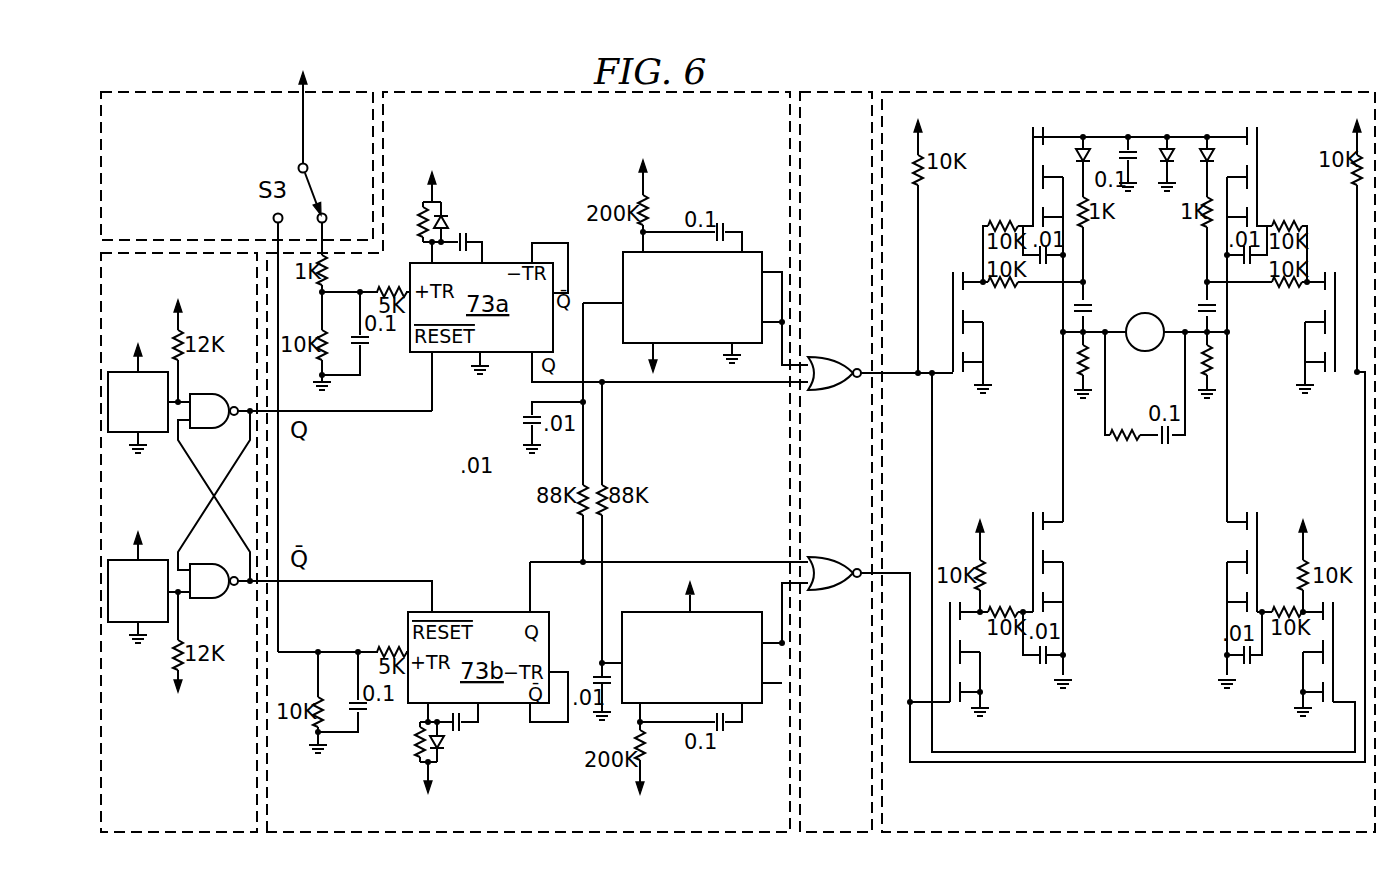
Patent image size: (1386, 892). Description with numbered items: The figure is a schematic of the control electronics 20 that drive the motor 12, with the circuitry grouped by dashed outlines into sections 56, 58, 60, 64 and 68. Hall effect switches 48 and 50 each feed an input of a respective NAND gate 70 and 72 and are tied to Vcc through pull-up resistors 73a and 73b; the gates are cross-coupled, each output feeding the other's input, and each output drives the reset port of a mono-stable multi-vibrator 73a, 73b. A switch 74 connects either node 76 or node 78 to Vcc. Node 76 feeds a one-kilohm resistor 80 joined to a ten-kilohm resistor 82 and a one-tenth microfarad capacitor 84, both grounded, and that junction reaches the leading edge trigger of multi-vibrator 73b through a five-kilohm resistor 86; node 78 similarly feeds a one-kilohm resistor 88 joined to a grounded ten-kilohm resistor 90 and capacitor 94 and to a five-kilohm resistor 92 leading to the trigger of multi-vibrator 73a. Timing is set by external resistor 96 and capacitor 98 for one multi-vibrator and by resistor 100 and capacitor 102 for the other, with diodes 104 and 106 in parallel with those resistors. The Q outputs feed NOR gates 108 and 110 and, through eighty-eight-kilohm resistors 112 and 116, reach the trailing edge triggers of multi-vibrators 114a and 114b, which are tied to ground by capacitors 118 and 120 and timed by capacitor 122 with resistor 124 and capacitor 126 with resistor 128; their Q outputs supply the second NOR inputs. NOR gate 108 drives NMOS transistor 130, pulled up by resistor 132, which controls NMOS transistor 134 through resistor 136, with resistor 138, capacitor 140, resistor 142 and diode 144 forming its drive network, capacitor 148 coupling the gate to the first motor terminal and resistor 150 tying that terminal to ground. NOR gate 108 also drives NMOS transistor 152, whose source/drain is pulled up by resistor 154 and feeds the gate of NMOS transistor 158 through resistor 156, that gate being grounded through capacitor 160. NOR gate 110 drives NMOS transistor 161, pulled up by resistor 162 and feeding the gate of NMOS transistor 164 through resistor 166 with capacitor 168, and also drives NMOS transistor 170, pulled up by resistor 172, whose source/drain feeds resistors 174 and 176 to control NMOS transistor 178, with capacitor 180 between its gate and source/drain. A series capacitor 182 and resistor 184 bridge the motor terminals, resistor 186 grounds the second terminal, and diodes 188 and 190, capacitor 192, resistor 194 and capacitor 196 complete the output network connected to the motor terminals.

The control electronics 20 is at (158, 60).
The motor 12 is at (1146, 352).
The hall effect switch 48 is at (162, 432).
The hall effect switch 50 is at (160, 560).
The switch input section 56 is at (179, 542).
The direction switch section 58 is at (237, 166).
The timer section 60 is at (528, 462).
The logic gate section 64 is at (836, 462).
The motor drive bridge section 68 is at (1128, 462).
The NAND gate 70 is at (220, 386).
The NAND gate 72 is at (212, 598).
The mono-stable multi-vibrator 73a is at (172, 336).
The mono-stable multi-vibrator 73b is at (170, 660).
The switch 74 is at (300, 164).
The node 76 is at (273, 218).
The node 78 is at (324, 212).
The 1K resistor 80 is at (316, 270).
The 10K resistor 82 is at (314, 728).
The 0.1 μF capacitor 84 is at (366, 714).
The 5K resistor 86 is at (390, 648).
The 1K resistor 88 is at (320, 290).
The 10K resistor 90 is at (318, 372).
The 5K resistor 92 is at (398, 288).
The 0.1 μF capacitor 94 is at (362, 348).
The external resistor 96 is at (418, 220).
The external capacitor 98 is at (470, 236).
The resistor 100 is at (416, 758).
The capacitor 102 is at (462, 730).
The diode 104 is at (447, 216).
The diode 106 is at (442, 756).
The NOR gate 108 is at (830, 358).
The NOR gate 110 is at (826, 558).
The 88K resistor 112 is at (578, 512).
The multi-vibrator 114a is at (672, 312).
The multi-vibrator 114b is at (682, 642).
The 88K resistor 116 is at (606, 512).
The capacitor 118 is at (528, 420).
The capacitor 120 is at (598, 674).
The capacitor 122 is at (722, 224).
The resistor 124 is at (648, 210).
The capacitor 126 is at (722, 732).
The resistor 128 is at (646, 752).
The NMOS transistor 130 is at (992, 362).
The 10K resistor 132 is at (922, 180).
The NMOS transistor 134 is at (1026, 140).
The 10K resistor 136 is at (1000, 222).
The 10K resistor 138 is at (1002, 290).
The capacitor 140 is at (1092, 300).
The resistor 142 is at (1088, 222).
The diode 144 is at (1088, 146).
The capacitor 148 is at (1046, 264).
The resistor 150 is at (1078, 360).
The NMOS transistor 152 is at (1290, 704).
The resistor 154 is at (1308, 566).
The 10K resistor 156 is at (1284, 606).
The NMOS transistor 158 is at (1264, 518).
The 0.01 μF capacitor 160 is at (1250, 664).
The NMOS transistor 161 is at (996, 702).
The 10K resistor 162 is at (974, 566).
The NMOS transistor 164 is at (1026, 518).
The 10K resistor 166 is at (1004, 606).
The 0.01 μF capacitor 168 is at (1046, 664).
The NMOS transistor 170 is at (1292, 370).
The pull-up resistor 172 is at (1352, 182).
The 10K resistor 174 is at (1288, 290).
The 10K resistor 176 is at (1286, 222).
The NMOS transistor 178 is at (1268, 144).
The 0.01 μF capacitor 180 is at (1246, 264).
The 0.1 μF capacitor 182 is at (1166, 444).
The resistor 184 is at (1122, 442).
The 120 ohm resistor 186 is at (1212, 358).
The diode 188 is at (1212, 144).
The diode 190 is at (1170, 144).
The capacitor 192 is at (1130, 144).
The resistor 194 is at (1202, 222).
The capacitor 196 is at (1196, 304).